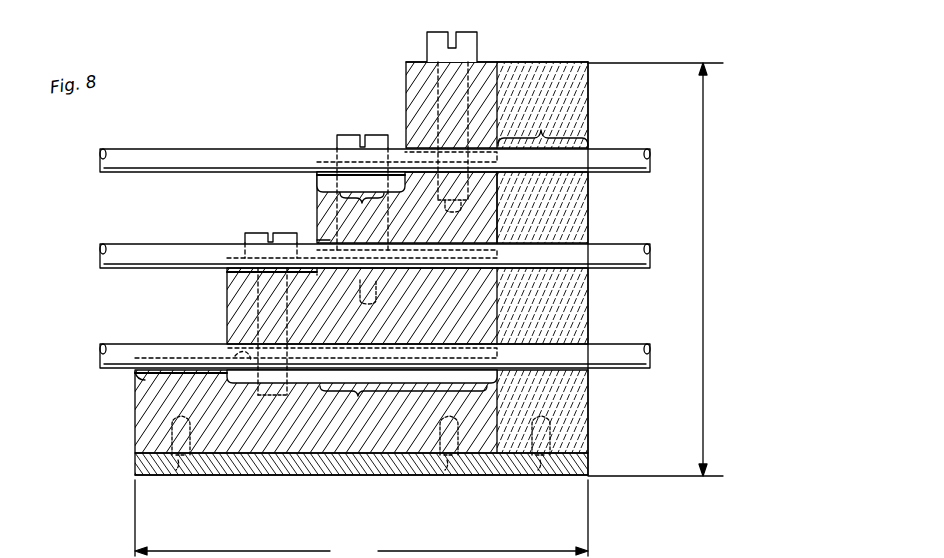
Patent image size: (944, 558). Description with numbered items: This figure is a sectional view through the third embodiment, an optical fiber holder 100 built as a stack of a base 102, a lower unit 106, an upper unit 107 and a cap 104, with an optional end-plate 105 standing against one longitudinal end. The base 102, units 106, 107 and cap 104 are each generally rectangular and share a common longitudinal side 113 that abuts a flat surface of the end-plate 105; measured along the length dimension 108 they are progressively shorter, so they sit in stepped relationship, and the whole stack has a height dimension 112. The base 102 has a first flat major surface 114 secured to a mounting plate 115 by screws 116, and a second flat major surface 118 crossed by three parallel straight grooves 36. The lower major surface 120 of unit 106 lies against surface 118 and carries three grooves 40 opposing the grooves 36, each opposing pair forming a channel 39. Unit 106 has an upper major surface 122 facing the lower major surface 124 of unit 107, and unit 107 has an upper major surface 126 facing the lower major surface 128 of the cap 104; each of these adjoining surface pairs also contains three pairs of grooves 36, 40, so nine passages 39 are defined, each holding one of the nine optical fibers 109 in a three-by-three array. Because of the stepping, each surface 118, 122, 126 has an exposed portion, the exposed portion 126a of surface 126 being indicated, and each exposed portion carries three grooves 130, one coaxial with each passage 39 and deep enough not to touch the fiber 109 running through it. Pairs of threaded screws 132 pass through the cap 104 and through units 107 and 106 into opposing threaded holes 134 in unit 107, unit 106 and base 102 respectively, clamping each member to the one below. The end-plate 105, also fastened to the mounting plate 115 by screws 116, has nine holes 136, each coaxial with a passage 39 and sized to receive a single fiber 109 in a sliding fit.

The optical fiber holder 100 is at (312, 46).
The base 102 is at (135, 432).
The cap 104 is at (405, 78).
The end-plate 105 is at (580, 62).
The unit 106 is at (227, 303).
The unit 107 is at (317, 212).
The length dimension 108 is at (361, 519).
The optical fibers 109 is at (100, 150).
The height dimension 112 is at (655, 269).
The common longitudinal side 113 is at (504, 70).
The first major surface 114 is at (325, 476).
The mounting plate 115 is at (588, 466).
The screws 116 is at (180, 472).
The second major surface 118 is at (232, 385).
The lower major surface 120 is at (240, 352).
The upper major surface 122 is at (345, 270).
The lower major surface 124 is at (320, 238).
The upper major surface 126 is at (502, 178).
The exposed portion 126a is at (361, 197).
The lower major surface 128 is at (500, 130).
The grooves 130 is at (317, 178).
The threaded screws 132 is at (437, 32).
The threaded holes 134 is at (322, 314).
The holes 136 is at (543, 126).
The grooves 36 is at (430, 176).
The channel 39 is at (362, 389).
The grooves 40 is at (413, 148).